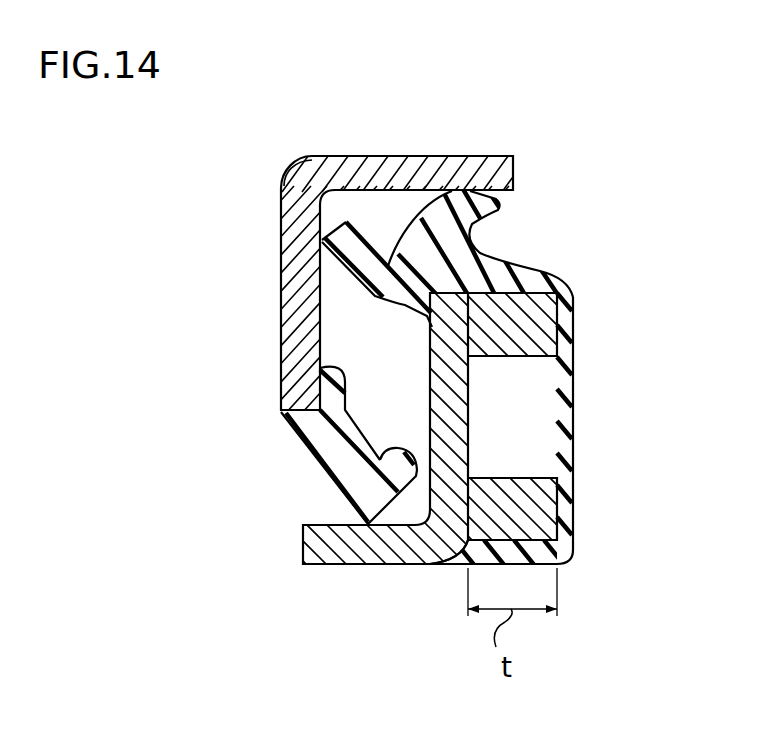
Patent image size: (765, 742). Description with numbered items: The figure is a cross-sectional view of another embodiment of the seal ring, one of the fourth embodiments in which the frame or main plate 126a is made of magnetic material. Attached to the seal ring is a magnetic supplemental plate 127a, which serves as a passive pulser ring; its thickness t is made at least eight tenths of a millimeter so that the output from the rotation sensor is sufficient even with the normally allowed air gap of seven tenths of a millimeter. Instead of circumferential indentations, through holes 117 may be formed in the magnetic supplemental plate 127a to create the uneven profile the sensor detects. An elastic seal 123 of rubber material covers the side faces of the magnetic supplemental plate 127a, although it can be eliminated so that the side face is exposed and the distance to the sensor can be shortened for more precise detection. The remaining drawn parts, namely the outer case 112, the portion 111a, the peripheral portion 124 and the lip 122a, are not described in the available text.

The outer case 112 is at (280, 289).
The elastic seal 123 is at (503, 257).
The elastic member outer portion 111a is at (573, 342).
The outer peripheral portion 124 is at (572, 414).
The through holes 117 is at (528, 478).
The magnetic supplemental plate 127a is at (570, 513).
The main plate 126a is at (322, 565).
The side lip 122a is at (407, 577).